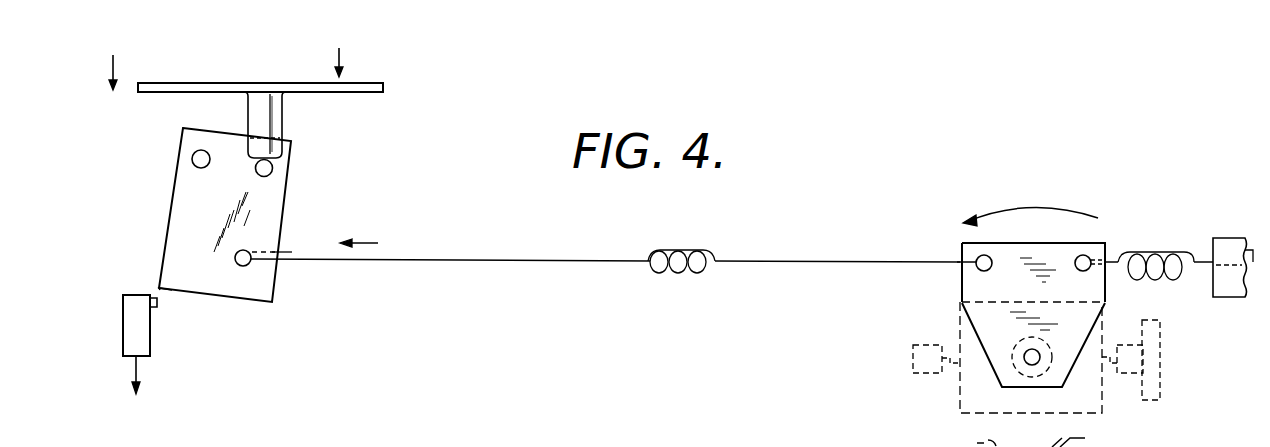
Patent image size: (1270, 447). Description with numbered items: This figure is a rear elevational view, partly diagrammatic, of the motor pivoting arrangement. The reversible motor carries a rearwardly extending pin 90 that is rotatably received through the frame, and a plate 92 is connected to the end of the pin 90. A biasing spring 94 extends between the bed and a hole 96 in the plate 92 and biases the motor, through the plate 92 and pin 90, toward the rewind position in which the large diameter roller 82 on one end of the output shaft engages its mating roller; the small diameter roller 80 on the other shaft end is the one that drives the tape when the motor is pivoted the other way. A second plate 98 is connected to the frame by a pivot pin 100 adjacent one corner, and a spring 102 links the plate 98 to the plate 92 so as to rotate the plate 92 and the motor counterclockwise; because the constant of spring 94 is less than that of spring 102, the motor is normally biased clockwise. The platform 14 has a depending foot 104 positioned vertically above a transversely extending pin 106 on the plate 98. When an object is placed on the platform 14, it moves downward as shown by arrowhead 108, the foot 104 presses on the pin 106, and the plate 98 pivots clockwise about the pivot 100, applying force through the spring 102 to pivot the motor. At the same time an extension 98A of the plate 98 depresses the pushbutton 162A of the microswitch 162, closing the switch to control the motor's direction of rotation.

The platform 14 is at (185, 82).
The arrowhead 108 is at (112, 68).
The depending foot 104 is at (274, 115).
The transversely extending pin 106 is at (272, 171).
The pivot pin 100 is at (192, 159).
The plate 98 is at (245, 297).
The extension 98A is at (163, 295).
The spring 102 is at (688, 248).
The microswitch 162 is at (128, 325).
The pushbutton 162A is at (153, 298).
The plate 92 is at (1034, 248).
The hole 96 is at (1090, 262).
The biasing spring 94 is at (1166, 257).
The pin 90 is at (1032, 365).
The small diameter roller 80 is at (913, 340).
The large diameter roller 82 is at (1152, 367).